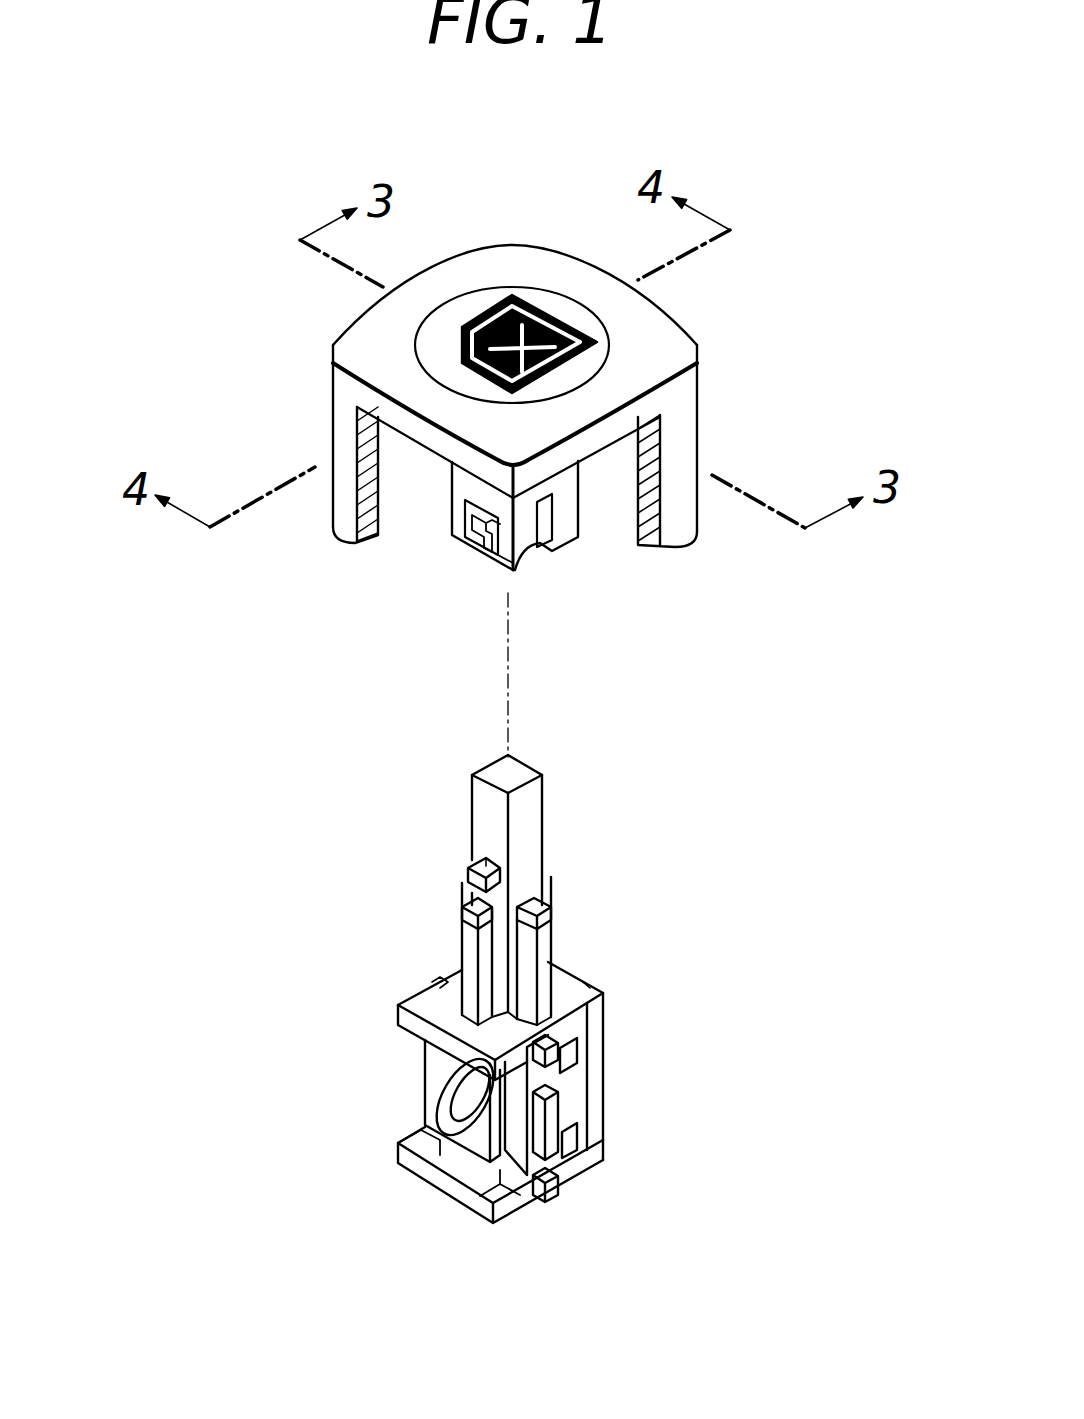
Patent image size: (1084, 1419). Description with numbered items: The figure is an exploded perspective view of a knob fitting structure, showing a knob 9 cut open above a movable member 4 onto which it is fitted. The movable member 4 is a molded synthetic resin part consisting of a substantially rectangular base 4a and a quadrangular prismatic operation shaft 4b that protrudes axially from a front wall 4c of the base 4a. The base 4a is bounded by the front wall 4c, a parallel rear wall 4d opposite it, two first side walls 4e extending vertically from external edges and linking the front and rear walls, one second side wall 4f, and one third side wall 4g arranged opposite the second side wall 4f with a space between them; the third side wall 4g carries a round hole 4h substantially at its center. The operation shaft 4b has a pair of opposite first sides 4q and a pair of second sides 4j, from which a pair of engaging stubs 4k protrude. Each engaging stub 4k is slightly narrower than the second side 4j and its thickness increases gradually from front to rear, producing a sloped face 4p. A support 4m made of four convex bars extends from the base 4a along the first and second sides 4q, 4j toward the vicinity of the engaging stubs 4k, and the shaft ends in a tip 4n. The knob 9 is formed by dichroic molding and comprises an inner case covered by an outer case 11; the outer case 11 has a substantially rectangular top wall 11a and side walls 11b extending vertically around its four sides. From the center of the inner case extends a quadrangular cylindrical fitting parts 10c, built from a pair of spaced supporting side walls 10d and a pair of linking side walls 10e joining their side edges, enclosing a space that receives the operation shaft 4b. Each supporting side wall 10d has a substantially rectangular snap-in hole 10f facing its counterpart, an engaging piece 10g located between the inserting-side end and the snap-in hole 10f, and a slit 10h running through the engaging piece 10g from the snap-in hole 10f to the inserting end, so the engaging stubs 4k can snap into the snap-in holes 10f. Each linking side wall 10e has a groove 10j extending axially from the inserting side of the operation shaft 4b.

The movable member 4 is at (725, 973).
The base 4a is at (524, 1143).
The operation shaft 4b is at (540, 883).
The front wall 4c is at (430, 997).
The rear wall 4d is at (513, 1207).
The first side walls 4e is at (425, 1072).
The second side wall 4f is at (586, 1048).
The third side wall 4g is at (513, 1135).
The round hole 4h is at (468, 1100).
The second sides 4j is at (482, 813).
The engaging stubs 4k is at (470, 878).
The support 4m is at (467, 948).
The tip 4n is at (525, 770).
The sloped face 4p is at (478, 865).
The first sides 4q is at (547, 823).
The knob 9 is at (582, 732).
The outer case 11 is at (600, 355).
The top wall 11a is at (521, 262).
The side walls 11b is at (677, 423).
The fitting parts 10c is at (587, 487).
The supporting side walls 10d is at (462, 485).
The linking side walls 10e is at (568, 515).
The snap-in holes 10f is at (460, 527).
The engaging pieces 10g is at (492, 555).
The slit 10h is at (482, 552).
The groove 10j is at (540, 552).